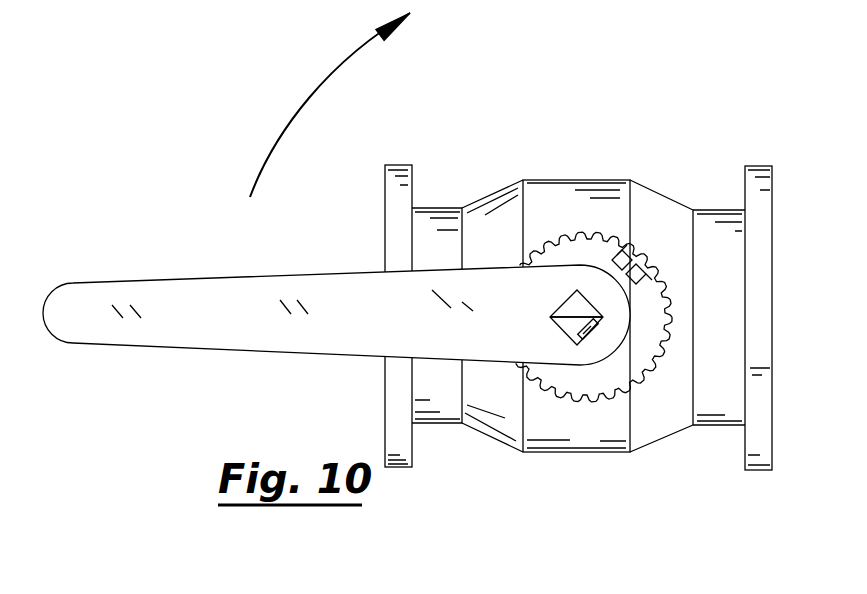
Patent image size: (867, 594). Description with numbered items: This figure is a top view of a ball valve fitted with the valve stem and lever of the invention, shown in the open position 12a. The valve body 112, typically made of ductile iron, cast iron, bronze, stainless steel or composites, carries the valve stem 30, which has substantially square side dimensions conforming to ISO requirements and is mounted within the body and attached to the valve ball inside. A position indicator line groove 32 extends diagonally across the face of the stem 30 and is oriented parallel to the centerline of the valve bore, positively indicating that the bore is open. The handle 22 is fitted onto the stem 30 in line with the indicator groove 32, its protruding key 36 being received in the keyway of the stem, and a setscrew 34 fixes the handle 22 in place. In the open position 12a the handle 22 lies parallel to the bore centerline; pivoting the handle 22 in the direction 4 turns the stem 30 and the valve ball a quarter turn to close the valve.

The direction of handle pivoting 4 is at (299, 106).
The open position 12a is at (458, 163).
The handle 22 is at (213, 300).
The valve stem 30 is at (577, 290).
The position indicator line groove 32 is at (552, 318).
The setscrew 34 is at (632, 255).
The protruding key 36 is at (592, 333).
The valve body 112 is at (580, 195).